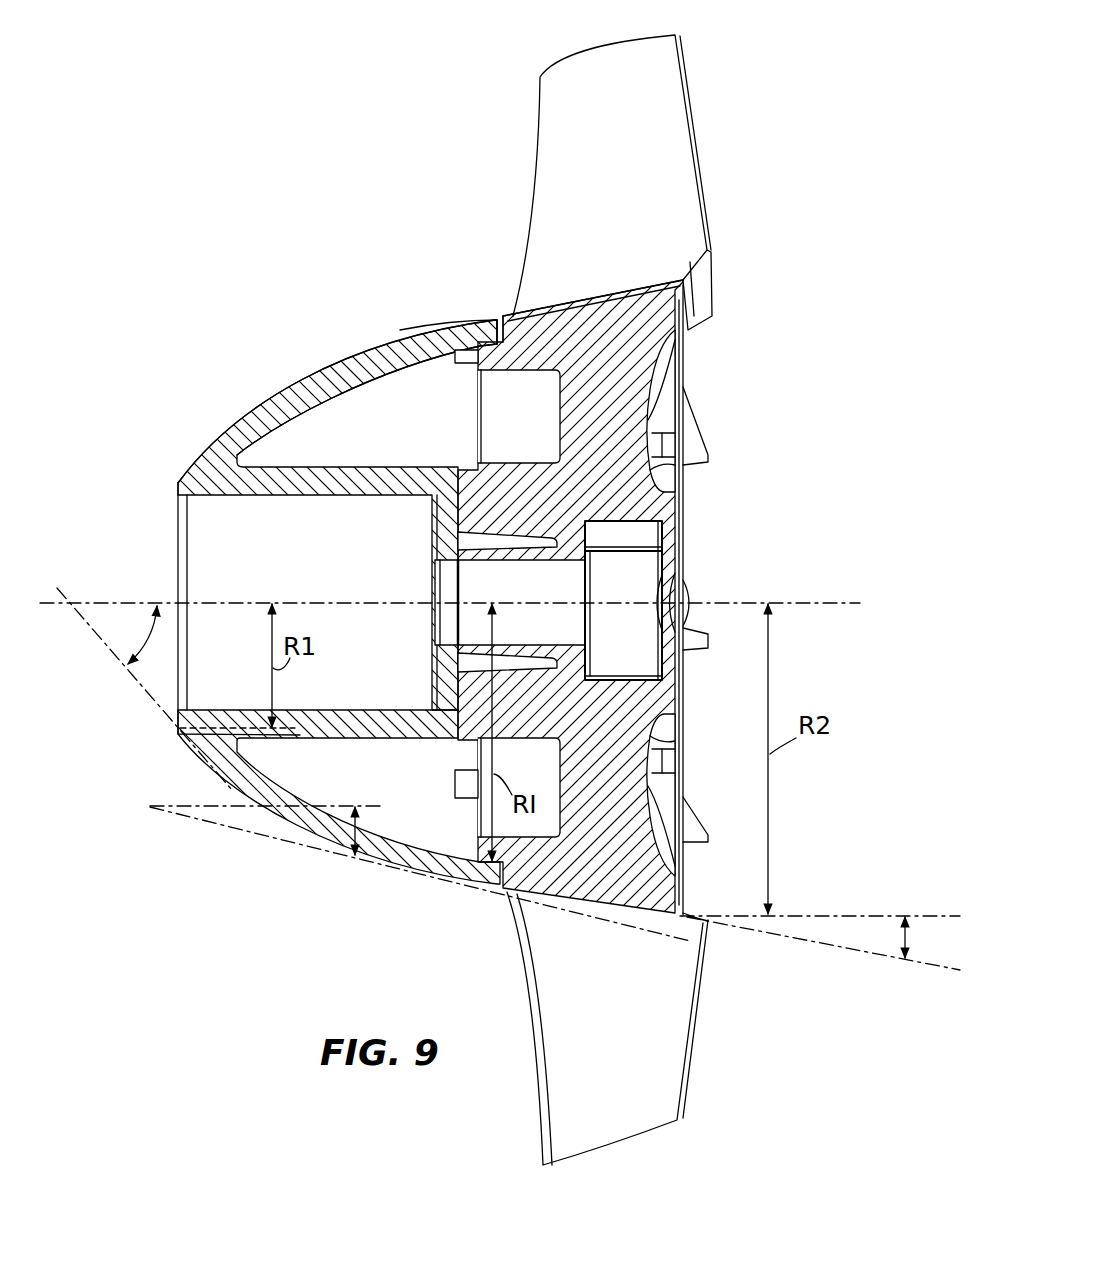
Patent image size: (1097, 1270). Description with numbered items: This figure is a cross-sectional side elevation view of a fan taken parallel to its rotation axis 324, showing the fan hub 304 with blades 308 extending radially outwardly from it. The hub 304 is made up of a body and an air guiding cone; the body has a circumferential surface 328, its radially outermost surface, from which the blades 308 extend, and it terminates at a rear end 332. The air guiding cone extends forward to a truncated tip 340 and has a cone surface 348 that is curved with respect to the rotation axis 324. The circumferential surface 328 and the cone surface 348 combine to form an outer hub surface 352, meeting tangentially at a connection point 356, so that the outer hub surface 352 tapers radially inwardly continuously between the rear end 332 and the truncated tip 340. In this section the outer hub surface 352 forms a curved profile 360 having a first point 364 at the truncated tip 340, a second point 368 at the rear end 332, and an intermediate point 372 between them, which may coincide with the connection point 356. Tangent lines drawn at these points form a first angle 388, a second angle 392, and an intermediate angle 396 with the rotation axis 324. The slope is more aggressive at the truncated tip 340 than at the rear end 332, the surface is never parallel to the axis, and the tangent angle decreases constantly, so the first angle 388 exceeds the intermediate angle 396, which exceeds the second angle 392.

The fan hub 304 is at (212, 450).
The blades 308 is at (648, 100).
The central rotational axis 324 is at (810, 602).
The circumferential surface 328 is at (630, 285).
The rear end 332 is at (692, 302).
The truncated tip 340 is at (176, 494).
The cone surface 348 is at (352, 350).
The outer hub surface 352 is at (418, 330).
The connection point 356 is at (500, 318).
The curved profile 360 is at (292, 378).
The first point 364 is at (177, 733).
The second point 368 is at (680, 923).
The intermediate point 372 is at (407, 870).
The first angle 388 is at (140, 626).
The second angle 392 is at (904, 940).
The intermediate angle 396 is at (347, 829).